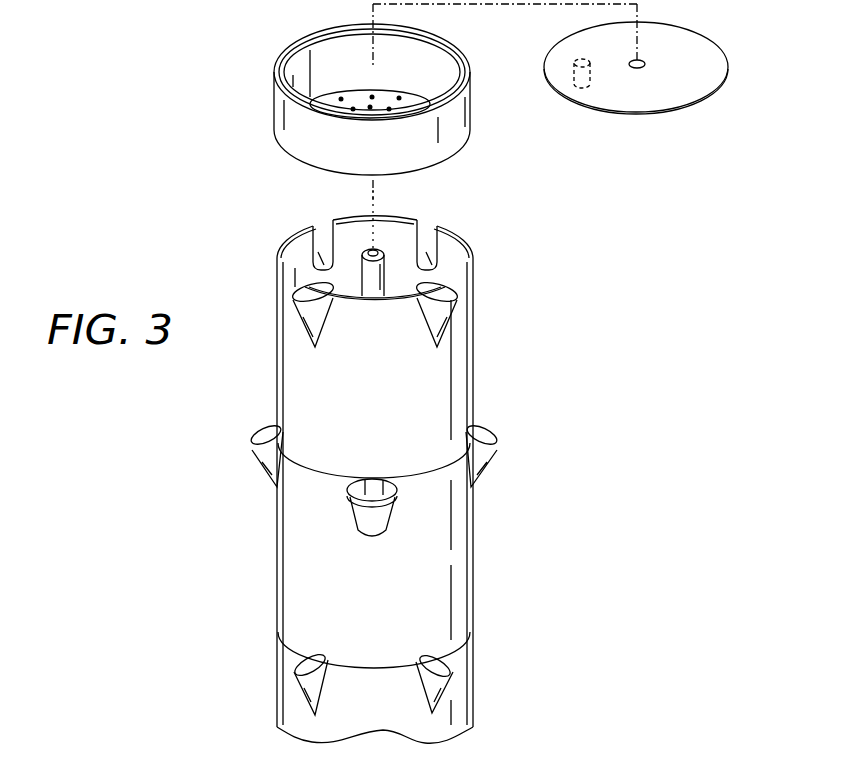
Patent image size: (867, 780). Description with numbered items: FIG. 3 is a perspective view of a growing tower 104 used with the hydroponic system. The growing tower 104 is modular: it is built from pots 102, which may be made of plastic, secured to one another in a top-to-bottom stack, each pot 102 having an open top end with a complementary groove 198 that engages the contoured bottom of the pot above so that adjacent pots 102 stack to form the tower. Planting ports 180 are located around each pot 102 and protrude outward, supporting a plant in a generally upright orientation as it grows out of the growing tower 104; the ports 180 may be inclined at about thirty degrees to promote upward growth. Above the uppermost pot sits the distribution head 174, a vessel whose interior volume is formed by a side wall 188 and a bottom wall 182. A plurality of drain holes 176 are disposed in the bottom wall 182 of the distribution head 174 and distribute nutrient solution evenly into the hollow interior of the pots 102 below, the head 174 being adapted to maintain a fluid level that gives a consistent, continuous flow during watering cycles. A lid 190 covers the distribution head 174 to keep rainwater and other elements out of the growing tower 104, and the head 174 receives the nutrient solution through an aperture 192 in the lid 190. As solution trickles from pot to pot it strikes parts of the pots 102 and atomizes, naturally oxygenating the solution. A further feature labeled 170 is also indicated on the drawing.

The pot 102 is at (290, 368).
The growing tower 104 is at (532, 540).
The outer sleeve 170 is at (375, 753).
The distribution head 174 is at (254, 104).
The drain holes 176 is at (370, 96).
The planting ports 180 is at (445, 333).
The bottom wall 182 is at (442, 158).
The side wall 188 is at (275, 145).
The lid 190 is at (667, 117).
The aperture 192 is at (566, 78).
The complementary groove 198 is at (240, 603).